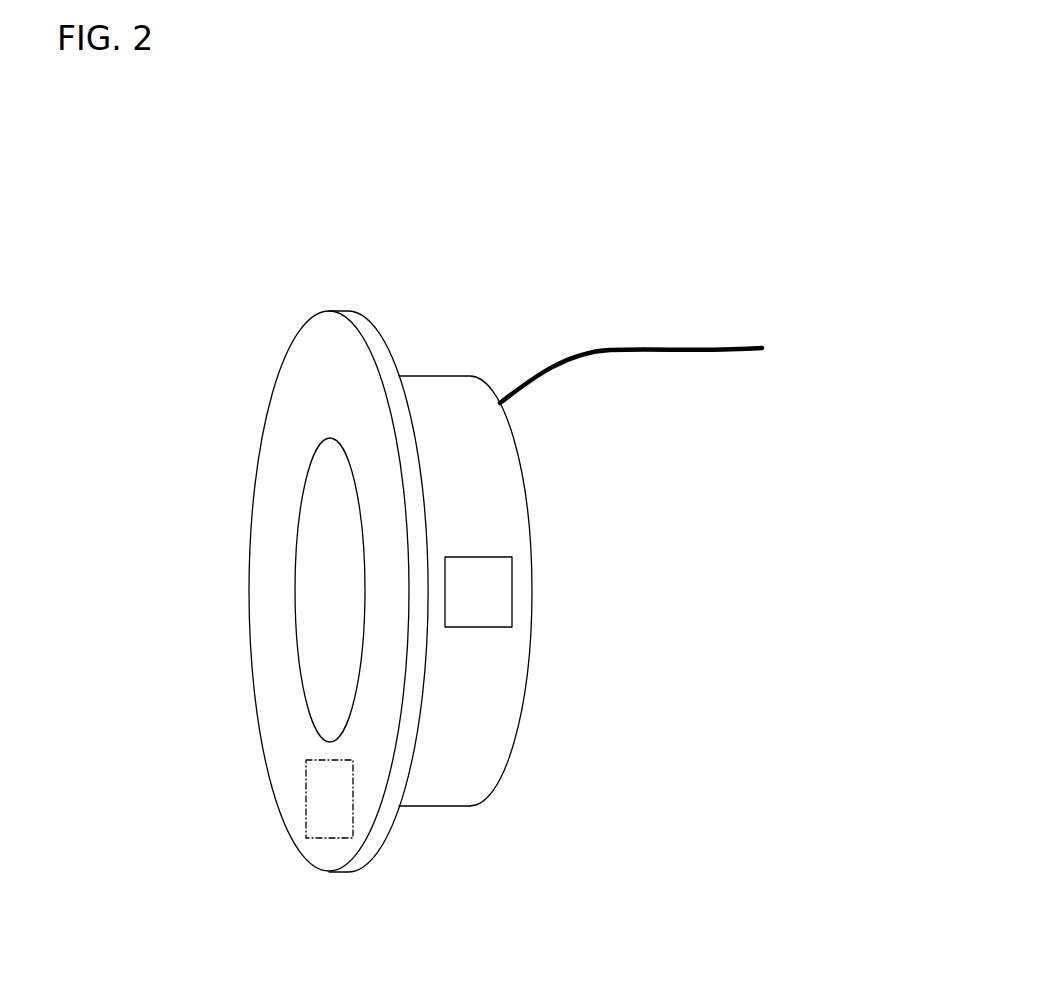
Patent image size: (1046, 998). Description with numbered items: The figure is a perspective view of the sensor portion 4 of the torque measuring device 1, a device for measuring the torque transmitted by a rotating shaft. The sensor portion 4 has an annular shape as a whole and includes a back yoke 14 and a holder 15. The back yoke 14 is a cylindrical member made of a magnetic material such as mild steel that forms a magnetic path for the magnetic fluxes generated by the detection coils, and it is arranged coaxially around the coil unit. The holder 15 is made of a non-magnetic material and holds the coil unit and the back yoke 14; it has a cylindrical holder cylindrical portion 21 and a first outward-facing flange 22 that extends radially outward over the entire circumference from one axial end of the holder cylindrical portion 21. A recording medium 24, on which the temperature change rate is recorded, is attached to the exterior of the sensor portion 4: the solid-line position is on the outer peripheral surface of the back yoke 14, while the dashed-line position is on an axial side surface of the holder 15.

The torque measuring device 1 is at (441, 556).
The sensor portion 4 is at (450, 807).
The back yoke 14 is at (493, 483).
The holder 15 is at (318, 338).
The holder cylindrical portion 21 is at (323, 553).
The first outward-facing flange 22 is at (277, 446).
The recording medium 24 is at (513, 587).